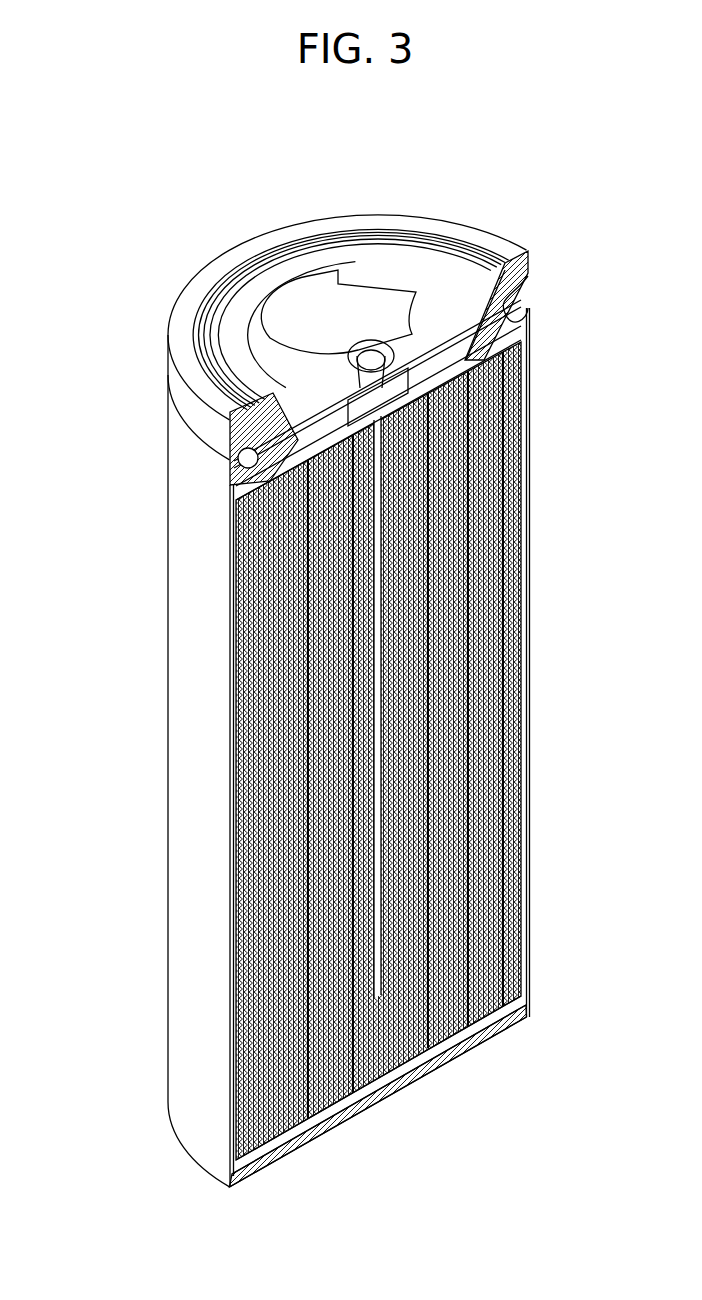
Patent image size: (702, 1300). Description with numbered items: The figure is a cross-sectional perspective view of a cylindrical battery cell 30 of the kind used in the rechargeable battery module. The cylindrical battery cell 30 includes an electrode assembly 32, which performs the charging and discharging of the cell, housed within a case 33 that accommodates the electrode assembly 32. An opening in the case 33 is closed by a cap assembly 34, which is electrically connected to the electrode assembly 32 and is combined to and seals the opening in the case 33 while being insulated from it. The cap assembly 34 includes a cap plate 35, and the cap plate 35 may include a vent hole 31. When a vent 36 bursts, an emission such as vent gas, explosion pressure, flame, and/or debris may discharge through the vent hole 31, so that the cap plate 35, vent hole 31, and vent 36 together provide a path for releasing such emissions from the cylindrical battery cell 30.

The cylindrical battery cell 30 is at (316, 655).
The vent hole 31 is at (322, 322).
The electrode assembly 32 is at (250, 913).
The case 33 is at (175, 638).
The cap assembly 34 is at (200, 335).
The cap plate 35 is at (225, 308).
The vent 36 is at (358, 345).